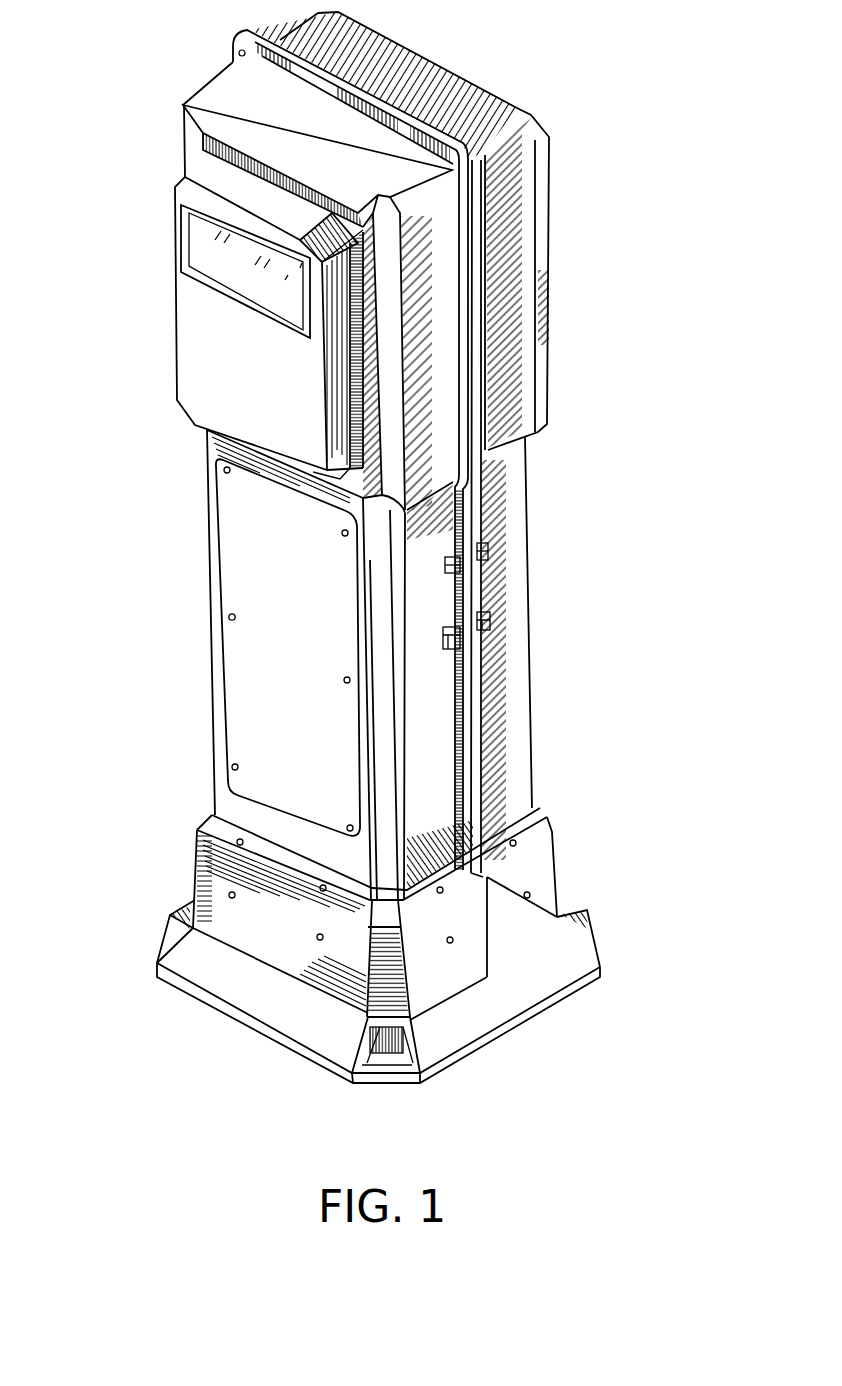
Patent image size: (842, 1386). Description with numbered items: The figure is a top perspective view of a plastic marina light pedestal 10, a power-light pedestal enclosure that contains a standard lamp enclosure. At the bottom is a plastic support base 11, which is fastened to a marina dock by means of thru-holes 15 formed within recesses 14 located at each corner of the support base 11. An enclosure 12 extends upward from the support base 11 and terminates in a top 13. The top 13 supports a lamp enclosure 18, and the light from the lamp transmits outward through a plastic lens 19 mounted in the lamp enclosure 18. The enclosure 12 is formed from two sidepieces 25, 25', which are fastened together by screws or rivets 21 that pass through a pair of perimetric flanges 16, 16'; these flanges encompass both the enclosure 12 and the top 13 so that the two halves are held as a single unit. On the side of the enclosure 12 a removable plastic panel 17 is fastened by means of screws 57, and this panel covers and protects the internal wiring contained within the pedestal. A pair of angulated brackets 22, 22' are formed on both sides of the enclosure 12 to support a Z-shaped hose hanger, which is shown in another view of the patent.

The plastic marina light pedestal 10 is at (708, 1046).
The plastic support base 11 is at (278, 949).
The enclosure 12 is at (446, 803).
The top 13 is at (448, 393).
The recesses 14 is at (418, 969).
The thru-holes 15 is at (383, 1062).
The perimetric flange 16 is at (537, 516).
The perimetric flange 16' is at (552, 760).
The removable plastic panel 17 is at (293, 665).
The lamp enclosure 18 is at (255, 287).
The plastic lens 19 is at (188, 240).
The screws or rivets 21 is at (457, 225).
The angulated bracket 22 is at (435, 672).
The angulated bracket 22' is at (553, 554).
The sidepiece 25 is at (231, 622).
The sidepiece 25' is at (579, 622).
The screws 57 is at (227, 614).